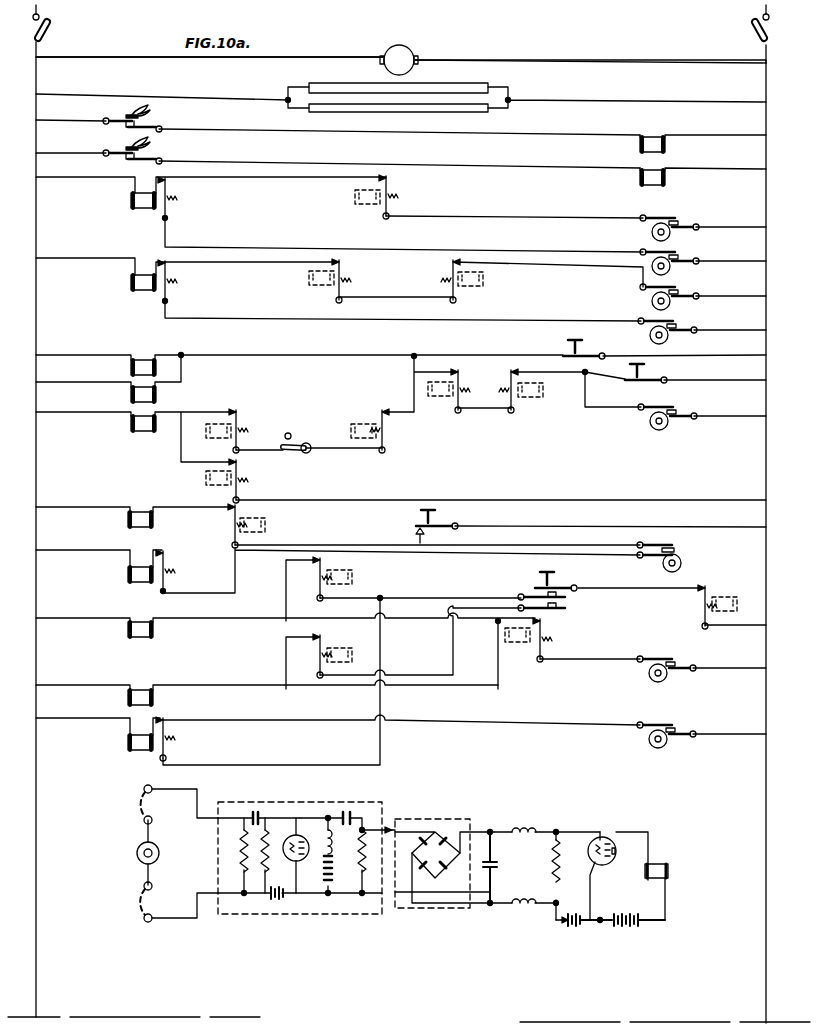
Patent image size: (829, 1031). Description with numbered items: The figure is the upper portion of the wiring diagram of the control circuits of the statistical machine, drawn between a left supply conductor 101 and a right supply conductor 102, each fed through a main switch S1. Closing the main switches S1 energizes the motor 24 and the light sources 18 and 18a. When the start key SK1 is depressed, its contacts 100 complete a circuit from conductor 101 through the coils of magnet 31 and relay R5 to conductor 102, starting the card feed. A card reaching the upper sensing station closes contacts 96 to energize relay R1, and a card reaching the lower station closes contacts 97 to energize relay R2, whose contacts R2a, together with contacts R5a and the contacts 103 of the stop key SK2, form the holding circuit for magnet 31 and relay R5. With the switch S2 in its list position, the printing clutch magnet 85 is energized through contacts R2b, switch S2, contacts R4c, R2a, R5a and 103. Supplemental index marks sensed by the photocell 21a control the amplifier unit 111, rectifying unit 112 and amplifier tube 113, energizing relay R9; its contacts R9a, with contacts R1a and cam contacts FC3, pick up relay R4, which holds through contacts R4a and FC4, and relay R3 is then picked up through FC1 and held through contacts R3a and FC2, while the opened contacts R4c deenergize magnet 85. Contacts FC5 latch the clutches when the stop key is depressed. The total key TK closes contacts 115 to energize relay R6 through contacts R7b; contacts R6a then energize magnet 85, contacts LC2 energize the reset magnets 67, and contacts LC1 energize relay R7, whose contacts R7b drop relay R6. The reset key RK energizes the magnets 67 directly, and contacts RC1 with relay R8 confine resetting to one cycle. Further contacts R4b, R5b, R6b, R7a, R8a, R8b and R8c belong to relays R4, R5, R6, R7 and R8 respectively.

The conductor 101 is at (55, 961).
The conductor 102 is at (740, 966).
The main switches S1 is at (49, 33).
The motor 24 is at (413, 52).
The light source 18 is at (460, 88).
The light source 18a is at (465, 111).
The contacts 96 is at (142, 124).
The contacts 97 is at (142, 156).
The relay R1 is at (652, 140).
The relay R2 is at (652, 172).
The relay R3 is at (131, 200).
The relay R4 is at (131, 283).
The relay R5 is at (131, 391).
The relay R6 is at (206, 478).
The relay R7 is at (264, 522).
The relay R8 is at (352, 578).
The relay R9 is at (483, 287).
The contacts R3a is at (168, 190).
The contacts R4a is at (168, 273).
The contacts R4b is at (390, 187).
The contacts R4c is at (388, 420).
The contacts R1a is at (342, 270).
The contacts R9a is at (445, 268).
The contacts R2a is at (452, 366).
The contacts R2b is at (240, 410).
The contacts R5a is at (516, 366).
The contacts R5b is at (702, 583).
The contacts R6a is at (240, 470).
The contacts R6b is at (545, 630).
The contacts R7a is at (166, 563).
The contacts R7b is at (232, 518).
The contacts R8a is at (166, 740).
The contacts R8b is at (320, 556).
The contacts R8c is at (313, 638).
The contacts FC1 is at (676, 222).
The contacts FC2 is at (676, 256).
The contacts FC3 is at (676, 291).
The contacts FC4 is at (674, 325).
The contacts FC5 is at (674, 411).
The control magnet 31 is at (143, 362).
The clutch control magnet 85 is at (131, 422).
The magnets 67 is at (140, 690).
The contacts 100 is at (568, 358).
The contacts 103 is at (628, 377).
The start key SK1 is at (590, 346).
The stop key SK2 is at (652, 369).
The switch S2 is at (299, 441).
The contacts 115 is at (410, 527).
The total key TK is at (437, 516).
The reset key RK is at (368, 591).
The contacts LC1 is at (675, 545).
The contacts LC2 is at (673, 663).
The contacts RC1 is at (673, 729).
The photocell 21a is at (137, 855).
The amplifier unit 111 is at (340, 802).
The rectifying unit 112 is at (432, 818).
The amplifier tube 113 is at (612, 840).